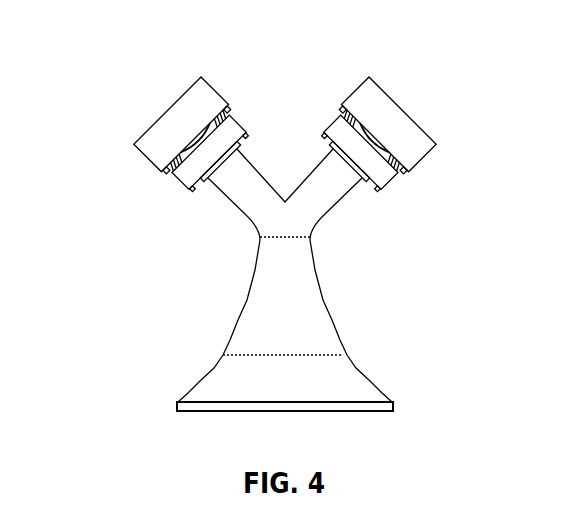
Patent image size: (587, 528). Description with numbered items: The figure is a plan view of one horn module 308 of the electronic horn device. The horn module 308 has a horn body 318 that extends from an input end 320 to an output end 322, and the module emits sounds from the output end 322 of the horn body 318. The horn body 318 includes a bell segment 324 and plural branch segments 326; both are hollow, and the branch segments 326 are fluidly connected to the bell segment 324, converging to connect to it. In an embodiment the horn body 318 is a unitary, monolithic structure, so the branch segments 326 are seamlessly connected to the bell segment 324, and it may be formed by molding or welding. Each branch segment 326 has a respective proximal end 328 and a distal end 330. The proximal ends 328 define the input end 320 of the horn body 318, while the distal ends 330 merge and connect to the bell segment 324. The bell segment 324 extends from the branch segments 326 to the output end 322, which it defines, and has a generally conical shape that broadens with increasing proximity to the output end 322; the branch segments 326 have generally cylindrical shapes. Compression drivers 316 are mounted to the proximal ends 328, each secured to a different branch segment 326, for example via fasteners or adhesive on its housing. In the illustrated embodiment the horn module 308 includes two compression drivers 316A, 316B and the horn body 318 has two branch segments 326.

The horn module 308 is at (155, 53).
The compression driver 316 is at (147, 140).
The compression driver 316A is at (185, 102).
The compression driver 316B is at (398, 118).
The input end 320 is at (280, 145).
The proximal end 328 is at (200, 187).
The branch segment 326 is at (248, 198).
The distal end 330 is at (253, 232).
The horn body 318 is at (320, 297).
The bell segment 324 is at (318, 342).
The output end 322 is at (335, 418).